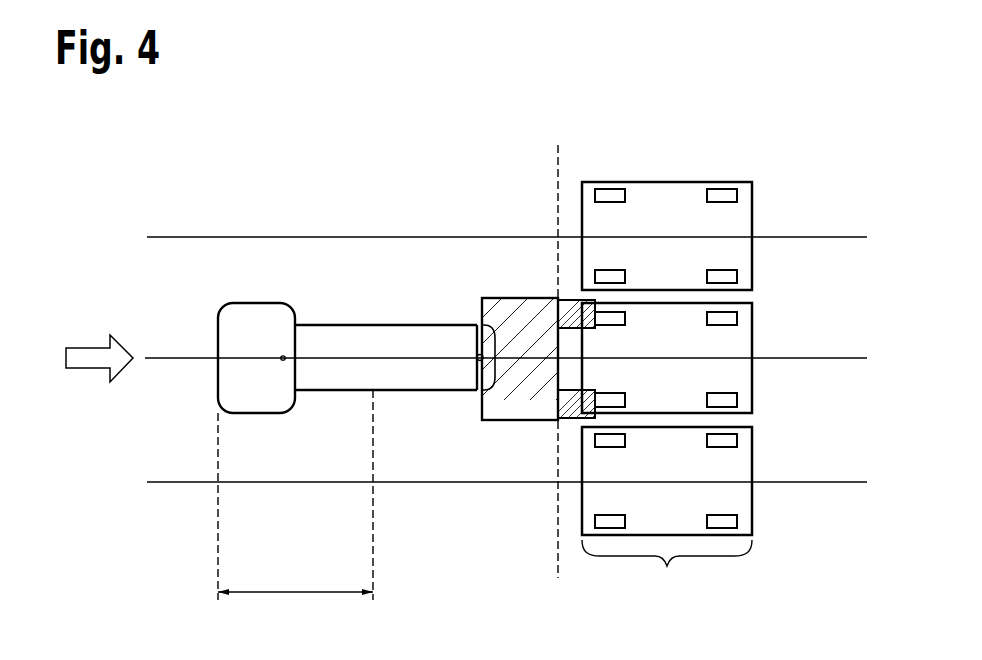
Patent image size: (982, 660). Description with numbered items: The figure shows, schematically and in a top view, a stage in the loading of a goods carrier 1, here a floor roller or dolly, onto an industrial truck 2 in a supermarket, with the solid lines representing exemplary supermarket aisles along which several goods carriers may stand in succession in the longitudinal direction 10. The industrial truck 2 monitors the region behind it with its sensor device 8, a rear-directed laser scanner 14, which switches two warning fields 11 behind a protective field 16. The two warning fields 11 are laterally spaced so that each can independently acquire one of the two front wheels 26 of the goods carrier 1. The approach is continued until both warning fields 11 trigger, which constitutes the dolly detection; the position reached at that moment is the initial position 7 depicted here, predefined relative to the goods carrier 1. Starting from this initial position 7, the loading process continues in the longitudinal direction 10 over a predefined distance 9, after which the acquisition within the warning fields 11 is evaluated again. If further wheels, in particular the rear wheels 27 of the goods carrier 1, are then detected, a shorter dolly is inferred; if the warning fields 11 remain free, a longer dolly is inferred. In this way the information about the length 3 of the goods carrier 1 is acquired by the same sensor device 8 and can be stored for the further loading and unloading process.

The goods carrier 1 is at (745, 208).
The industrial truck 2 is at (116, 282).
The length 3 is at (686, 391).
The initial position 7 is at (216, 558).
The sensor device 8 is at (395, 429).
The predefined distance 9 is at (303, 592).
The longitudinal direction 10 is at (80, 362).
The warning field 11 is at (577, 313).
The laser scanner 14 is at (480, 358).
The protective field 16 is at (498, 313).
The front wheel 26 is at (617, 318).
The rear wheel 27 is at (725, 318).